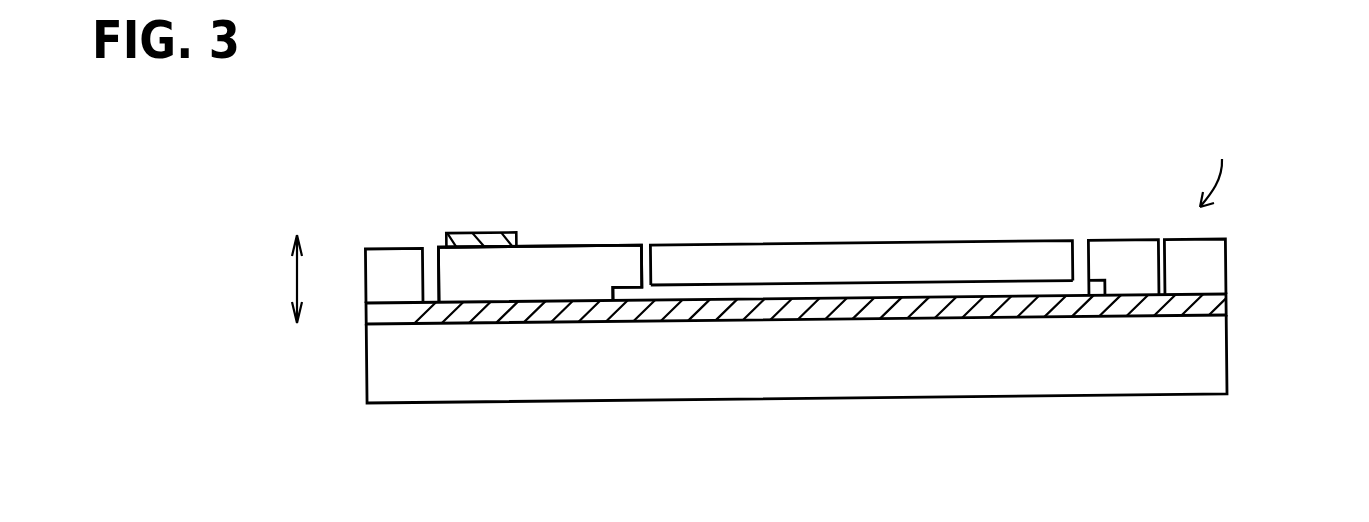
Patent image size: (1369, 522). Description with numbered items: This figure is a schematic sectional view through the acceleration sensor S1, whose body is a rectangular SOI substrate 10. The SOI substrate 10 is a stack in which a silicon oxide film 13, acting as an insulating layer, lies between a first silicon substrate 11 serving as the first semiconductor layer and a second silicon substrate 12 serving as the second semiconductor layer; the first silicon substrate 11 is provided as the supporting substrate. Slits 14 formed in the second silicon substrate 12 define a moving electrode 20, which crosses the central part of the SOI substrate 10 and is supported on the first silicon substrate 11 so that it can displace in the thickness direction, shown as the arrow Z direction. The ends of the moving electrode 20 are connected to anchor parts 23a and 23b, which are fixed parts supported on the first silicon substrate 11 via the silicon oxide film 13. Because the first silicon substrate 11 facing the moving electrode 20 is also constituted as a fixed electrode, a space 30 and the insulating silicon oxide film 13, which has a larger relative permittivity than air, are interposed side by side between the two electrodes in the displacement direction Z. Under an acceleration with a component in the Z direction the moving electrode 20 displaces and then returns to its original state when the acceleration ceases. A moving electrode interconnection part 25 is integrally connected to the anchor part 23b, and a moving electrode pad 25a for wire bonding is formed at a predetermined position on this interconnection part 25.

The SOI substrate 10 is at (1303, 237).
The first silicon substrate 11 is at (1207, 352).
The second silicon substrate 12 is at (1207, 263).
The silicon oxide film 13 is at (1215, 297).
The slits 14 is at (432, 263).
The moving electrode 20 is at (873, 257).
The anchor part 23a is at (1133, 255).
The anchor part 23b is at (582, 263).
The moving electrode interconnection part 25 is at (525, 258).
The moving electrode pad 25a is at (478, 234).
The space 30 is at (783, 292).
The acceleration sensor S1 is at (1237, 158).
The arrow Z direction Z is at (276, 279).